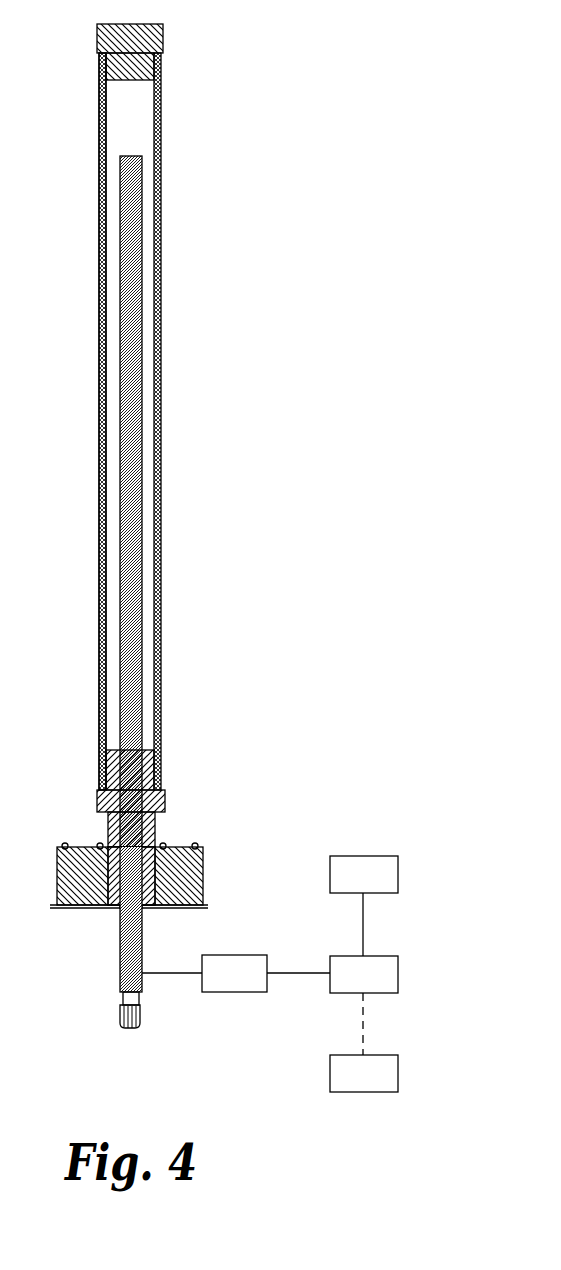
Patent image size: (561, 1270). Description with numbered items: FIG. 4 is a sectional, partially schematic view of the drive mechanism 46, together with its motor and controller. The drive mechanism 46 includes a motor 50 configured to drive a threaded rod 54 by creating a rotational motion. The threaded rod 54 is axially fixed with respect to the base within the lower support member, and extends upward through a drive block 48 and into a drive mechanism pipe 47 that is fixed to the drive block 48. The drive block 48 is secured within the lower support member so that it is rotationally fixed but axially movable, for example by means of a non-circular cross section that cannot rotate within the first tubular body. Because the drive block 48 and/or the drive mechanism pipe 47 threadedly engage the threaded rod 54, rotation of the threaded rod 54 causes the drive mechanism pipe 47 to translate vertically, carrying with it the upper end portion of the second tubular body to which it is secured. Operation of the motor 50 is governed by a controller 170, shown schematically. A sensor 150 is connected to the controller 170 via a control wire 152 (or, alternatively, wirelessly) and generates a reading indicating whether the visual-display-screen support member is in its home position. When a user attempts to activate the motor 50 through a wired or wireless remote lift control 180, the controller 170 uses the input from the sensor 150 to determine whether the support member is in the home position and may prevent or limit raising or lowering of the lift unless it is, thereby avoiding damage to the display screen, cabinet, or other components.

The drive mechanism 46 is at (178, 340).
The drive mechanism pipe 47 is at (100, 115).
The drive block 48 is at (200, 878).
The motor 50 is at (236, 973).
The threaded rod 54 is at (141, 542).
The sensor 150 is at (364, 874).
The control wire 152 is at (363, 933).
The controller 170 is at (364, 974).
The lift control 180 is at (364, 1042).